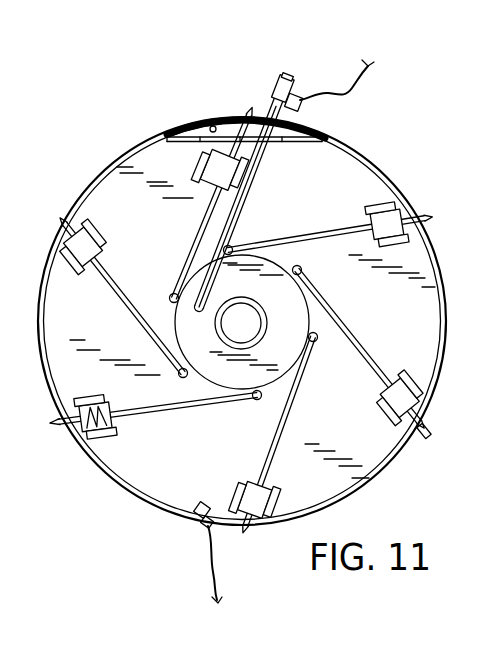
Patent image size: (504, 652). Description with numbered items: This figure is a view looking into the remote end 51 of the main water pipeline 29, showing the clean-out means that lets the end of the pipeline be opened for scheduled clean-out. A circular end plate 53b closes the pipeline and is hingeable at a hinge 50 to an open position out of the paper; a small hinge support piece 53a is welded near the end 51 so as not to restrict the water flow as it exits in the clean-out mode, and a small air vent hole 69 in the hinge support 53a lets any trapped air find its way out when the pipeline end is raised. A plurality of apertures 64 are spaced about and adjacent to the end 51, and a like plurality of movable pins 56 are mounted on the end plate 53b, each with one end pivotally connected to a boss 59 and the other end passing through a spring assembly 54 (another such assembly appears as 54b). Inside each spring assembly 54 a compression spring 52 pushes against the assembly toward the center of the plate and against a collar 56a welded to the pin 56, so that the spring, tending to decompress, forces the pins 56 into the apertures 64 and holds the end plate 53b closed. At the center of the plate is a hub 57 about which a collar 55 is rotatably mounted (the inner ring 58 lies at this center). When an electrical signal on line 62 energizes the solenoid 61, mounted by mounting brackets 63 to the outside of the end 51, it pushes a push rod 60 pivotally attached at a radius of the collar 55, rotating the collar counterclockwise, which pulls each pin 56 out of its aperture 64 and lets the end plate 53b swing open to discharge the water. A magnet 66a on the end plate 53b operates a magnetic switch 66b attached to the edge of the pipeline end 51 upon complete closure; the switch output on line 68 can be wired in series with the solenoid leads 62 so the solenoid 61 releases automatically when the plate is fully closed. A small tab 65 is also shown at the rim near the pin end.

The main water pipeline 29 is at (137, 145).
The hinge 50 is at (198, 143).
The end of pipeline 51 is at (387, 157).
The compression spring 52 is at (86, 399).
The hinge support piece 53a is at (230, 130).
The end plate 53b is at (428, 362).
The spring assembly 54 is at (238, 486).
The clamp 54b is at (103, 225).
The collar 55 is at (308, 317).
The movable pin 56 is at (292, 410).
The collar 56a is at (70, 434).
The hub 57 is at (236, 310).
The hub ring 58 is at (262, 312).
The boss 59 is at (318, 344).
The push rod 60 is at (250, 186).
The solenoid 61 is at (281, 80).
The line 62 is at (346, 88).
The mounting brackets 63 is at (297, 106).
The aperture 64 is at (396, 433).
The rim tab 65 is at (429, 430).
The magnet 66a is at (198, 505).
The magnetic switch 66b is at (202, 524).
The line 68 is at (209, 588).
The air vent hole 69 is at (207, 122).